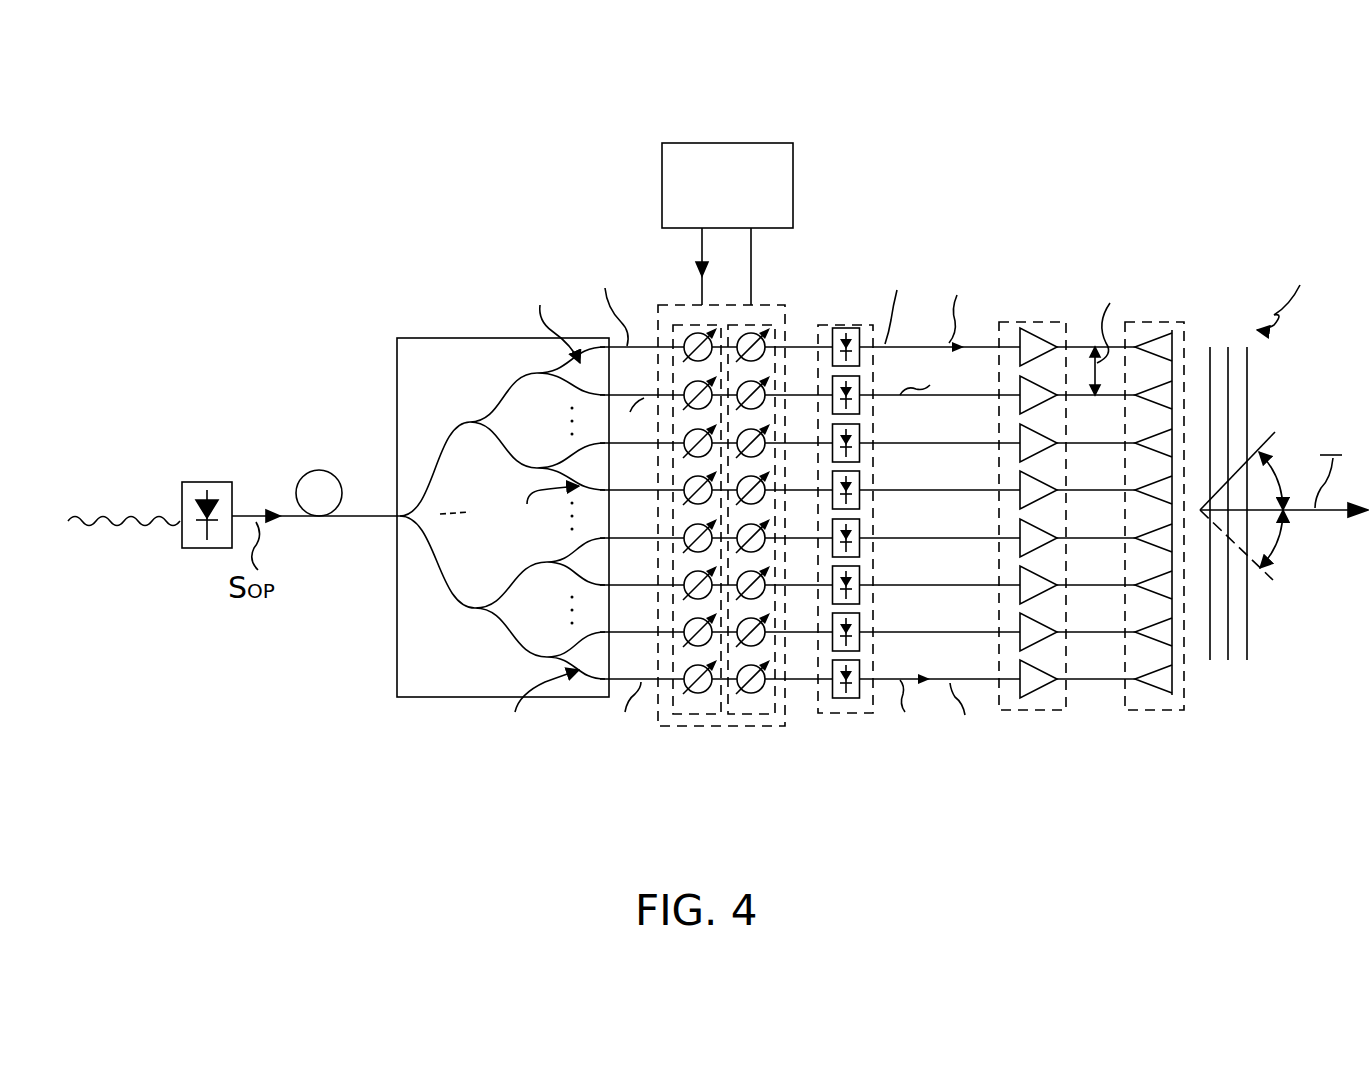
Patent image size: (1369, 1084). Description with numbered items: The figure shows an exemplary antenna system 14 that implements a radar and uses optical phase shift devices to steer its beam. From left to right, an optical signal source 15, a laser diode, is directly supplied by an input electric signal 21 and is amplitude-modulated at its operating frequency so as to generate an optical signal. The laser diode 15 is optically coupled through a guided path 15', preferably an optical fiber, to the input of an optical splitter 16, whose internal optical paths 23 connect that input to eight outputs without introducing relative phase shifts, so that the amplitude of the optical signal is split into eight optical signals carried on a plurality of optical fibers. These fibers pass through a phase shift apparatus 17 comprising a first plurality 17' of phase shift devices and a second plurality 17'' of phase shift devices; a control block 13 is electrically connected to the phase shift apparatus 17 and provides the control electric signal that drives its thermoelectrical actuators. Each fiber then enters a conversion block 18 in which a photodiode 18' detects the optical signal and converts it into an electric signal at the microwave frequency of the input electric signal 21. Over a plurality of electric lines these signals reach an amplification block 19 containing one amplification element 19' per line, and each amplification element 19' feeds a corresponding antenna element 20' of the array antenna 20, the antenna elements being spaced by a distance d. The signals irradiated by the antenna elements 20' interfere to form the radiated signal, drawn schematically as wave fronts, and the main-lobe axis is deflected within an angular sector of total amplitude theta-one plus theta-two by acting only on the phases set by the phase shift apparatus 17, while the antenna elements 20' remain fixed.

The control block 13 is at (740, 205).
The antenna system 14 is at (1060, 208).
The optical signal source 15 is at (215, 482).
The guided path 15' is at (338, 464).
The optical splitter 16 is at (503, 468).
The phase shift apparatus 17 is at (744, 517).
The first plurality of phase shift devices 17' is at (684, 565).
The second plurality of phase shift devices 17'' is at (769, 565).
The conversion block 18 is at (864, 517).
The photodiode 18' is at (872, 735).
The amplification block 19 is at (1046, 515).
The amplification element 19' is at (1045, 720).
The array antenna 20 is at (1168, 508).
The antenna element 20' is at (1173, 722).
The input electric signal 21 is at (104, 520).
The optical paths 23 is at (447, 608).